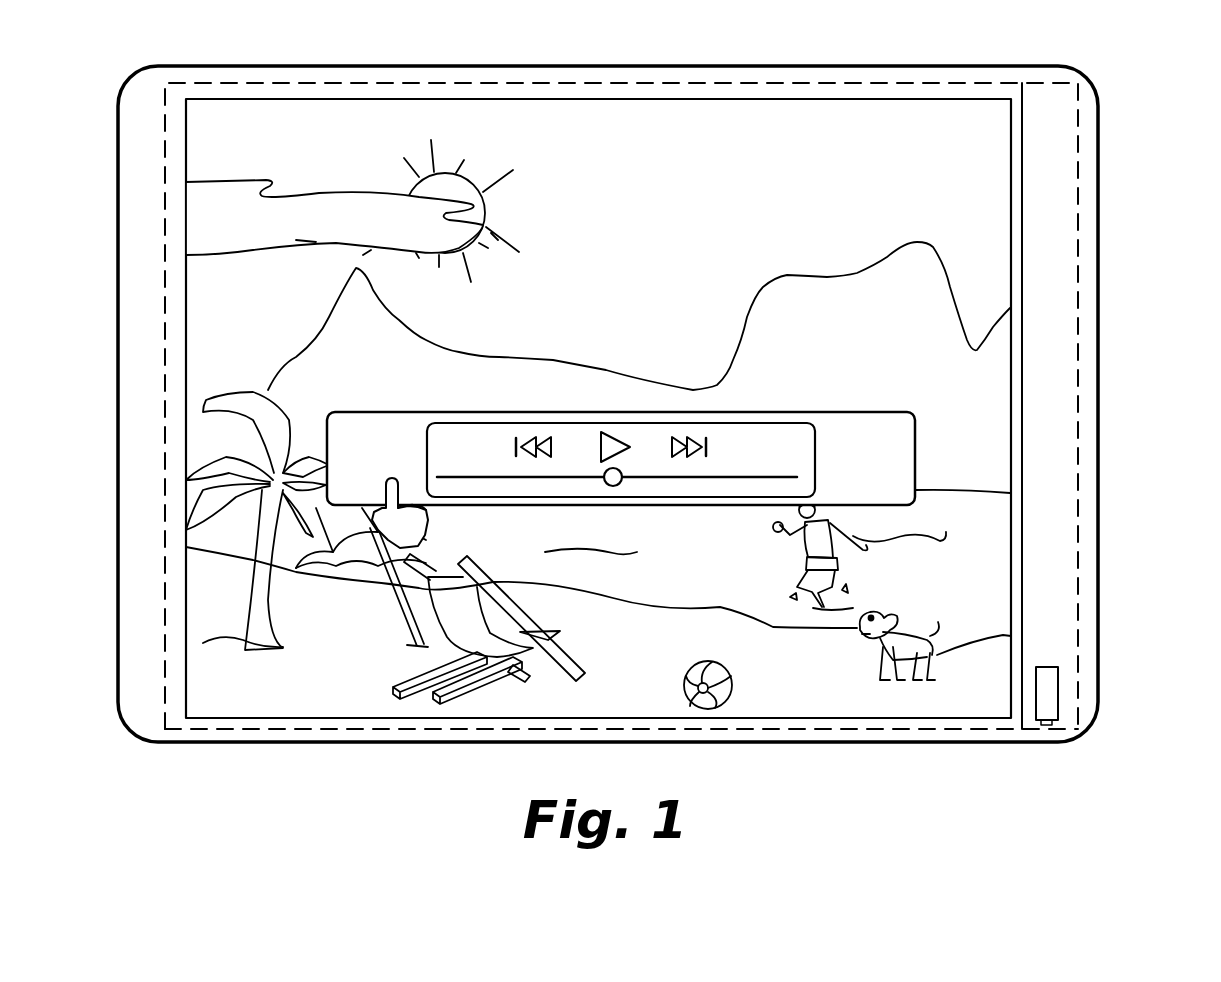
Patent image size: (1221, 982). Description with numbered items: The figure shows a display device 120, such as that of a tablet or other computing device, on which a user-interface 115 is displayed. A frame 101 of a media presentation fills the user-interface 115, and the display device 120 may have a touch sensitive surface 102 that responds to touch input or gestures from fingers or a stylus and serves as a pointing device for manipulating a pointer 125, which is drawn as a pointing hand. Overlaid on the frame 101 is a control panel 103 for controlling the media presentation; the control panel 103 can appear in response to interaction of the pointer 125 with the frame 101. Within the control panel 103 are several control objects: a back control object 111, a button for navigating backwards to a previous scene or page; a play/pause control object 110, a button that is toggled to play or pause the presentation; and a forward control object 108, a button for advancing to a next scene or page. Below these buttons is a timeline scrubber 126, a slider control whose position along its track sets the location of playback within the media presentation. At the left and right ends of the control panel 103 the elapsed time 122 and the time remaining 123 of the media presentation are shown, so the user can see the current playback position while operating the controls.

The frame 101 is at (1011, 290).
The surface 102 is at (918, 731).
The control panel 103 is at (777, 413).
The forward control object 108 is at (697, 440).
The play/pause control object 110 is at (613, 436).
The back control object 111 is at (532, 440).
The user-interface 115 is at (395, 82).
The display device 120 is at (955, 66).
The elapsed time 122 is at (360, 450).
The time remaining 123 is at (855, 452).
The pointer 125 is at (399, 533).
The timeline scrubber 126 is at (603, 483).